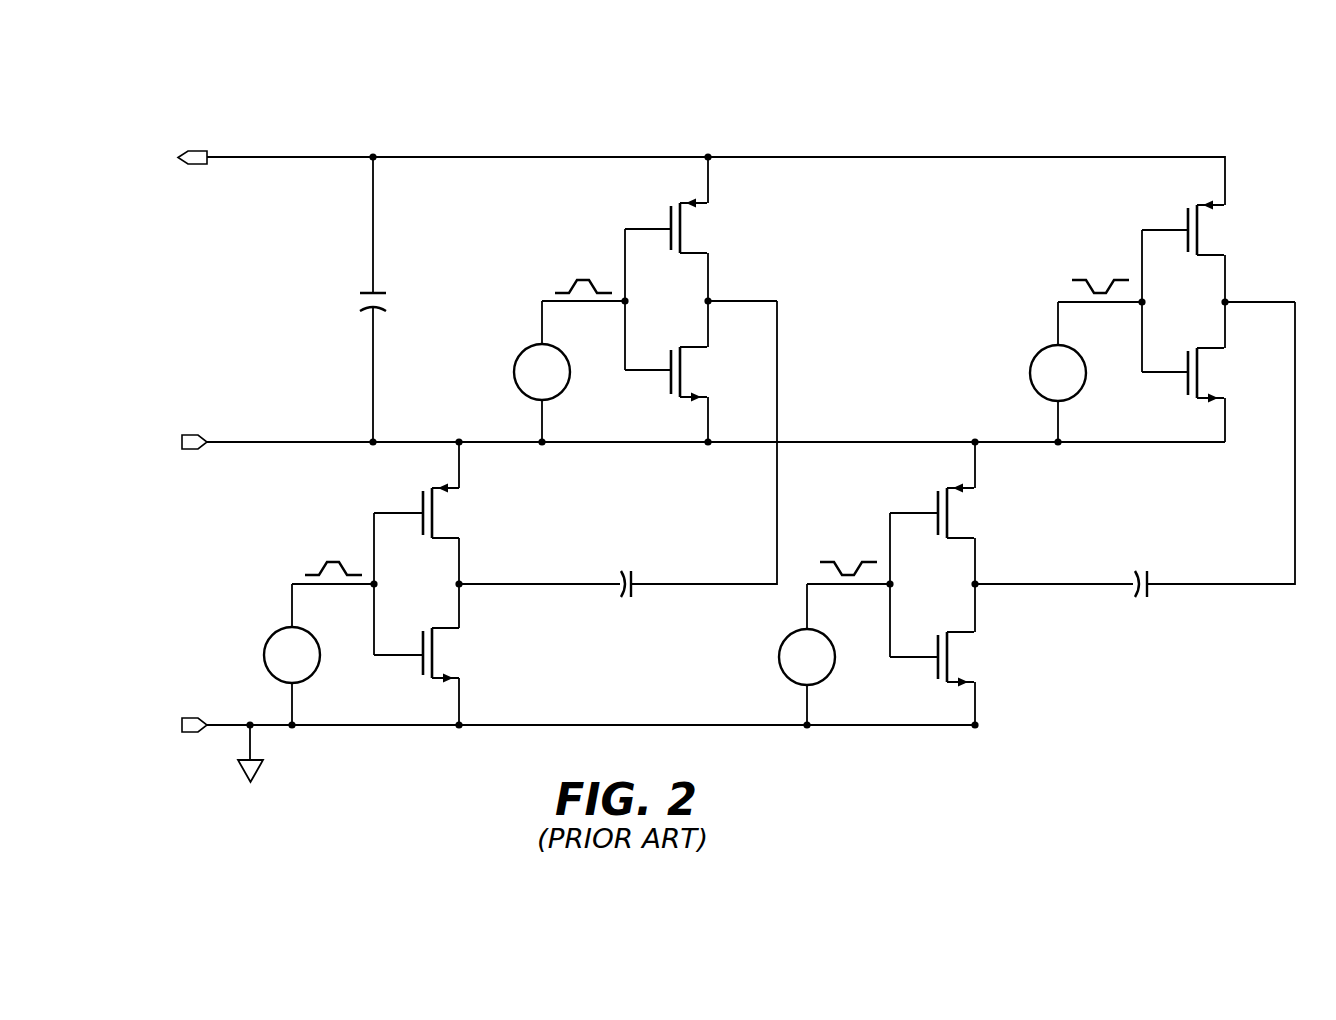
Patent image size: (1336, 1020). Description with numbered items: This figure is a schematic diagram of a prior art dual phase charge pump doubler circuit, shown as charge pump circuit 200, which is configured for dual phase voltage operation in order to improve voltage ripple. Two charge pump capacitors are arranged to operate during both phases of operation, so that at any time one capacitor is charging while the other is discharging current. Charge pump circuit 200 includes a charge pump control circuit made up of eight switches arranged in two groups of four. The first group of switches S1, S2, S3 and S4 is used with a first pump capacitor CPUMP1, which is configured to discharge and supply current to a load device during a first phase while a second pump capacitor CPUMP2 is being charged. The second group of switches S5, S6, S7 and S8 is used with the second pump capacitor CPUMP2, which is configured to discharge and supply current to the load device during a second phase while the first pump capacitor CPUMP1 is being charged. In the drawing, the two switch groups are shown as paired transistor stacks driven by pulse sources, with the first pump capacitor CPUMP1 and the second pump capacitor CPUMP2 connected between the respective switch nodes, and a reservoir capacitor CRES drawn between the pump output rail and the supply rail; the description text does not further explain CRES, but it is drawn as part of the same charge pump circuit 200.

The charge pump circuit 200 is at (905, 119).
The switch S1 is at (460, 511).
The switch S2 is at (460, 655).
The switch S3 is at (709, 227).
The switch S4 is at (709, 374).
The switch S5 is at (975, 659).
The switch S6 is at (975, 511).
The switch S7 is at (1225, 228).
The switch S8 is at (1225, 375).
The reservoir capacitor CRES is at (337, 299).
The first pump capacitor CPUMP1 is at (625, 561).
The second pump capacitor CPUMP2 is at (1141, 560).